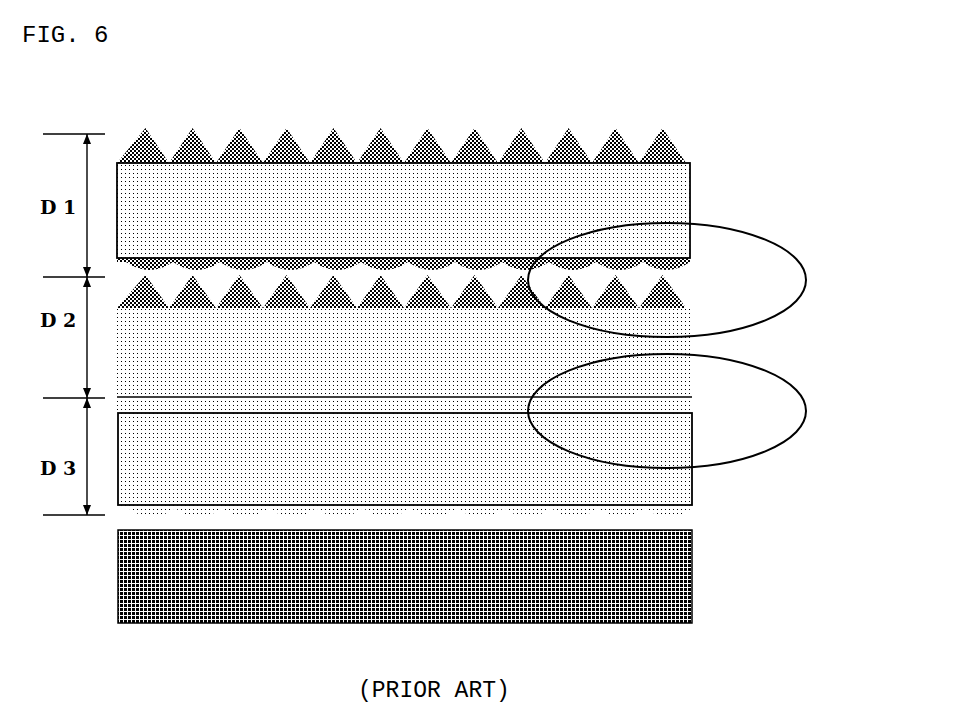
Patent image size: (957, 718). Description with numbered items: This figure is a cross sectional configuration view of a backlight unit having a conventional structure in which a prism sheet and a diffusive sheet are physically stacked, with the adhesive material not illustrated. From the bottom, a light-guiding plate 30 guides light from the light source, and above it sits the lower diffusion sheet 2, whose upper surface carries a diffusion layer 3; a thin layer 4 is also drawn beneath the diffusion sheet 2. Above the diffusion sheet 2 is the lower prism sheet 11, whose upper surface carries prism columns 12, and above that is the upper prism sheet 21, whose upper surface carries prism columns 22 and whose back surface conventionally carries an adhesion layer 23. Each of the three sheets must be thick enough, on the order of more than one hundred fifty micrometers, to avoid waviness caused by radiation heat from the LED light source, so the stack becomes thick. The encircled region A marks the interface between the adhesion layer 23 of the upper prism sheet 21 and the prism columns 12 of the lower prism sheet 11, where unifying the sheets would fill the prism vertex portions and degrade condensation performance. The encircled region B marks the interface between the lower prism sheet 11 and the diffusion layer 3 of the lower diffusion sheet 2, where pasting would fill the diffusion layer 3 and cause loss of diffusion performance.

The prism column 22 is at (643, 152).
The upper prism sheet 21 is at (657, 207).
The adhesion layer 23 is at (688, 268).
The prism column 12 is at (675, 298).
The lower prism sheet 11 is at (692, 343).
The diffusion layer 3 is at (690, 411).
The lower diffusion sheet 2 is at (680, 482).
The lower adhesive / reflective interface layer 4 is at (695, 516).
The light-guiding plate 30 is at (690, 583).
The A portion A is at (802, 253).
The B portion B is at (812, 424).